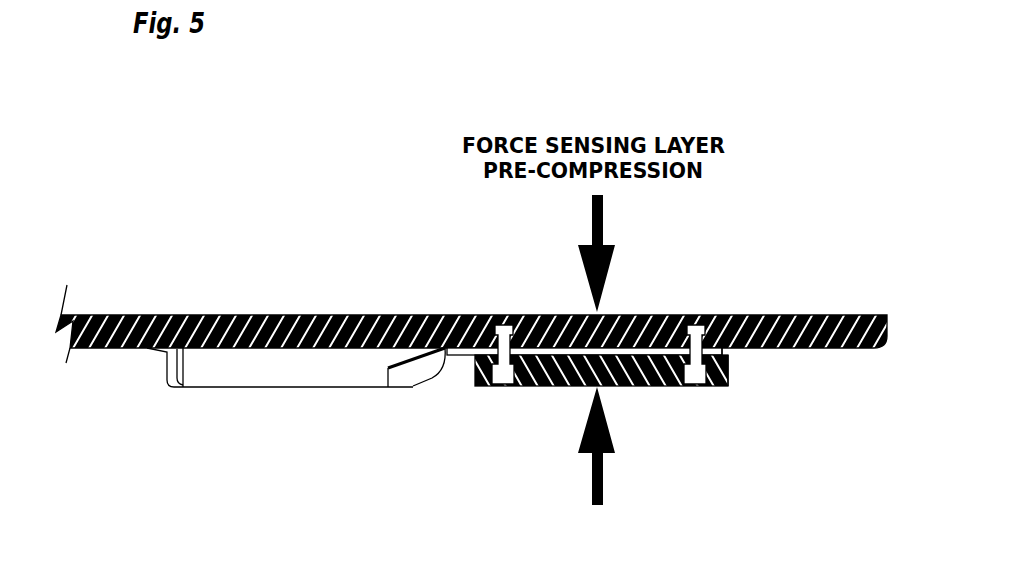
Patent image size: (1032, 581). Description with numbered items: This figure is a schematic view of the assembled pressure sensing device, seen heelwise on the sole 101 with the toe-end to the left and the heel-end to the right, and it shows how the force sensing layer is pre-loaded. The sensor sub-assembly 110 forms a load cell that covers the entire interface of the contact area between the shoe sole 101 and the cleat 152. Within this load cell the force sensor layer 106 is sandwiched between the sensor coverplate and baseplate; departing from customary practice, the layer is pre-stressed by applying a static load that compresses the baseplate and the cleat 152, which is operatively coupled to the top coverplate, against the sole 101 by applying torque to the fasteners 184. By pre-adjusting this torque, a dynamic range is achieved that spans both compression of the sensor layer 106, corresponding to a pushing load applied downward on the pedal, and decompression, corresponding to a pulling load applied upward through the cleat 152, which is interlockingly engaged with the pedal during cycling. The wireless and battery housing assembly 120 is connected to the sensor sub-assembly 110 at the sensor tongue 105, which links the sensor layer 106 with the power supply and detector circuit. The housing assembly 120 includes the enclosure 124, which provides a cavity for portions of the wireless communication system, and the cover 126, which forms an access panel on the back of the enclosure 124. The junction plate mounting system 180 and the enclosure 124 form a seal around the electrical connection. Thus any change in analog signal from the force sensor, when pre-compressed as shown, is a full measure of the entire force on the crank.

The sole 101 is at (333, 315).
The sensor tongue 105 is at (467, 356).
The force sensor layer 106 is at (730, 349).
The sensor sub-assembly 110 is at (738, 357).
The wireless housing assembly 120 is at (274, 416).
The enclosure 124 is at (290, 389).
The cover 126 is at (165, 356).
The cleat 152 is at (560, 389).
The junction plate mounting system 180 is at (416, 384).
The fasteners 184 is at (694, 378).